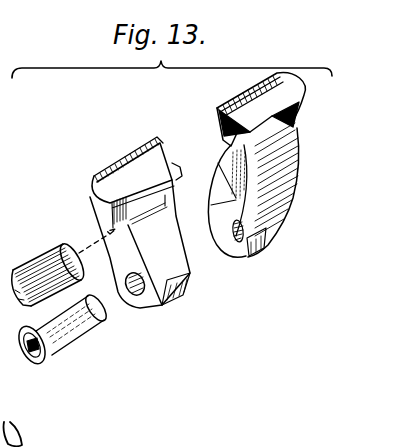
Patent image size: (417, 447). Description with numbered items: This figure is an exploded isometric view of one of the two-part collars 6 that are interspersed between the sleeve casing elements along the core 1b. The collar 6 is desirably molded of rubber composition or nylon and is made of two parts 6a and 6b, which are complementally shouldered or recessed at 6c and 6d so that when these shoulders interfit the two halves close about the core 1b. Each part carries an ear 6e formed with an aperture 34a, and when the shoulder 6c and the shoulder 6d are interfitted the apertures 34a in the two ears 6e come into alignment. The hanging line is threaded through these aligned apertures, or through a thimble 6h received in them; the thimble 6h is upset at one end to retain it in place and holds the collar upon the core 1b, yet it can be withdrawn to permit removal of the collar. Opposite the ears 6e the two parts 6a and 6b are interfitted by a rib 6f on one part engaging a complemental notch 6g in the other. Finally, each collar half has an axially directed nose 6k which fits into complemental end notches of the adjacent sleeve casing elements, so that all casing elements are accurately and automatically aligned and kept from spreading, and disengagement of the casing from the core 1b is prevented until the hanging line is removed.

The core 1b is at (35, 265).
The two-part collar 6 is at (230, 262).
The collar part 6a is at (258, 165).
The collar part 6b is at (196, 218).
The shoulder 6c is at (219, 120).
The shoulder 6d is at (173, 165).
The ear 6e is at (150, 307).
The rib 6f is at (183, 172).
The notch 6g is at (272, 142).
The thimble 6h is at (65, 349).
The nose 6k is at (98, 181).
The aperture 34a is at (137, 296).